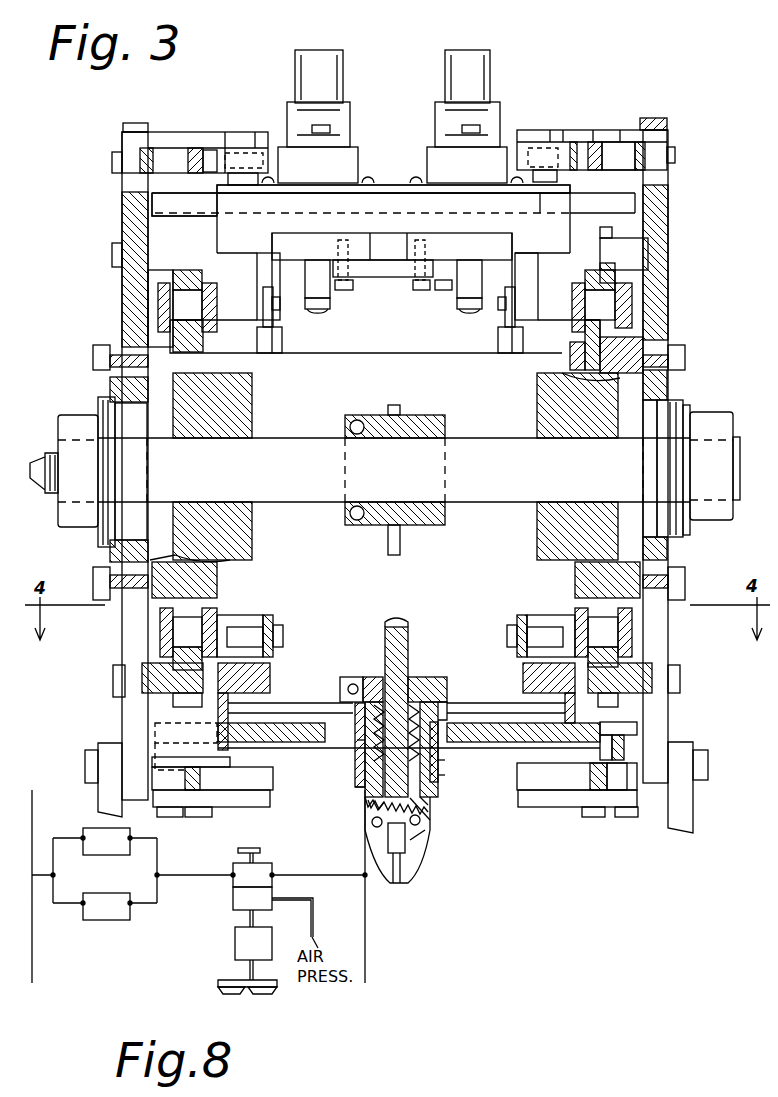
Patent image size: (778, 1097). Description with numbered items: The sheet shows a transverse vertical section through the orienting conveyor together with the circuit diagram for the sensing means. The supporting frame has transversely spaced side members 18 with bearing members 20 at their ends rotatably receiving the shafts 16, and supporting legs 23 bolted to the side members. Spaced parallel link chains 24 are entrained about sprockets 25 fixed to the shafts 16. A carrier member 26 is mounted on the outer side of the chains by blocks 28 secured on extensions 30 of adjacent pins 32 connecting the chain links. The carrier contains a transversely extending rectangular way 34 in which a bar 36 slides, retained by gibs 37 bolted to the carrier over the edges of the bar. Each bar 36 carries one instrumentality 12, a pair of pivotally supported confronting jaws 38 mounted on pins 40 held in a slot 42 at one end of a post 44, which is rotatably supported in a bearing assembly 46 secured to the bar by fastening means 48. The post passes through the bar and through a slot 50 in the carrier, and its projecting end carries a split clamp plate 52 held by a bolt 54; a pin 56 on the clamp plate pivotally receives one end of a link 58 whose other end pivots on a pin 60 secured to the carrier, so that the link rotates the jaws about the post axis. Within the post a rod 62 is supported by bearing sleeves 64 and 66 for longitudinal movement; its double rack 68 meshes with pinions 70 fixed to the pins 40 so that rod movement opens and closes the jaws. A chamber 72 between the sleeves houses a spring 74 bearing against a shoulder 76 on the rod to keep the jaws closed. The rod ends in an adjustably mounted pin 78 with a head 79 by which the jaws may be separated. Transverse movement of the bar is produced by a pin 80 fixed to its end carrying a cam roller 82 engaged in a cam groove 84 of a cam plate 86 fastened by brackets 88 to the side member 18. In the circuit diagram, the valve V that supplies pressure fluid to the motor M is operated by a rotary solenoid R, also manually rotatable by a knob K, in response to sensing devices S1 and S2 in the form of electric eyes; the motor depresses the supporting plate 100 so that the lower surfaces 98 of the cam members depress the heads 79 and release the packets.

In FIG. 3, the instrumentality 12 is at (510, 66).
In FIG. 3, the shaft 16 is at (313, 445).
In FIG. 3, the side member 18 is at (128, 642).
In FIG. 3, the bearing member 20 is at (685, 552).
In FIG. 3, the supporting leg 23 is at (100, 792).
In FIG. 3, the link chain 24 is at (212, 612).
In FIG. 3, the sprocket 25 is at (252, 384).
In FIG. 3, the carrier member 26 is at (388, 200).
In FIG. 3, the block 28 is at (390, 276).
In FIG. 3, the extension 30 is at (282, 305).
In FIG. 3, the pin 32 is at (158, 312).
In FIG. 3, the way 34 is at (528, 212).
In FIG. 3, the bar 36 is at (152, 205).
In FIG. 3, the gib 37 is at (366, 185).
In FIG. 3, the jaw 38 is at (392, 885).
In FIG. 3, the pin 40 is at (370, 826).
In FIG. 3, the slot 42 is at (427, 812).
In FIG. 3, the post 44 is at (438, 765).
In FIG. 3, the bearing assembly 46 is at (438, 779).
In FIG. 3, the fastening means 48 is at (440, 748).
In FIG. 3, the slot 50 is at (283, 705).
In FIG. 3, the split clamp plate 52 is at (378, 686).
In FIG. 3, the bolt 54 is at (349, 680).
In FIG. 3, the pin 56 is at (443, 291).
In FIG. 3, the link 58 is at (389, 278).
In FIG. 3, the pin 60 is at (343, 291).
In FIG. 3, the rod 62 is at (365, 776).
In FIG. 3, the bearing sleeve 64 is at (413, 700).
In FIG. 3, the bearing sleeve 66 is at (365, 791).
In FIG. 3, the double rack 68 is at (372, 808).
In FIG. 3, the pinion 70 is at (424, 836).
In FIG. 3, the chamber 72 is at (428, 800).
In FIG. 3, the spring 74 is at (372, 753).
In FIG. 3, the shoulder 76 is at (440, 706).
In FIG. 3, the pin 78 is at (410, 645).
In FIG. 3, the head 79 is at (399, 621).
In FIG. 3, the pin 80 is at (548, 175).
In FIG. 3, the cam roller 82 is at (560, 140).
In FIG. 3, the cam groove 84 is at (612, 150).
In FIG. 3, the cam plate 86 is at (195, 148).
In FIG. 3, the bracket 88 is at (620, 130).
In FIG. 8, the lower surface 98 is at (226, 994).
In FIG. 8, the supporting plate 100 is at (228, 982).
In FIG. 8, the knob K is at (239, 850).
In FIG. 8, the sensing device S1 is at (106, 841).
In FIG. 8, the sensing device S2 is at (106, 906).
In FIG. 8, the rotary solenoid R is at (252, 875).
In FIG. 8, the valve V is at (252, 898).
In FIG. 8, the motor M is at (253, 943).